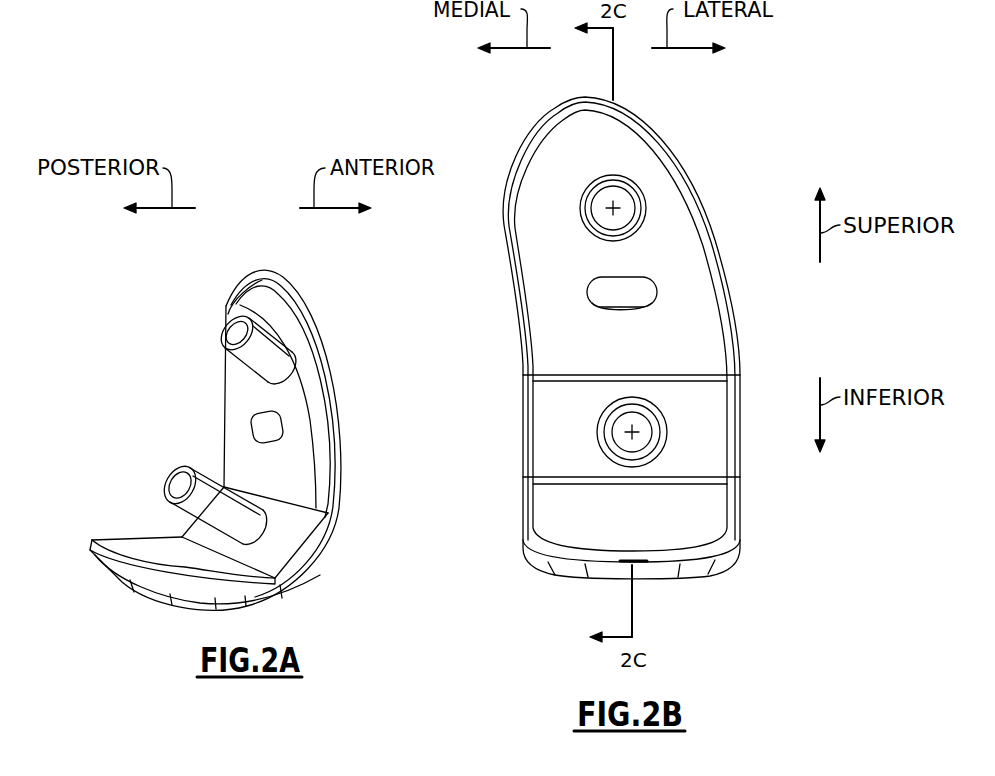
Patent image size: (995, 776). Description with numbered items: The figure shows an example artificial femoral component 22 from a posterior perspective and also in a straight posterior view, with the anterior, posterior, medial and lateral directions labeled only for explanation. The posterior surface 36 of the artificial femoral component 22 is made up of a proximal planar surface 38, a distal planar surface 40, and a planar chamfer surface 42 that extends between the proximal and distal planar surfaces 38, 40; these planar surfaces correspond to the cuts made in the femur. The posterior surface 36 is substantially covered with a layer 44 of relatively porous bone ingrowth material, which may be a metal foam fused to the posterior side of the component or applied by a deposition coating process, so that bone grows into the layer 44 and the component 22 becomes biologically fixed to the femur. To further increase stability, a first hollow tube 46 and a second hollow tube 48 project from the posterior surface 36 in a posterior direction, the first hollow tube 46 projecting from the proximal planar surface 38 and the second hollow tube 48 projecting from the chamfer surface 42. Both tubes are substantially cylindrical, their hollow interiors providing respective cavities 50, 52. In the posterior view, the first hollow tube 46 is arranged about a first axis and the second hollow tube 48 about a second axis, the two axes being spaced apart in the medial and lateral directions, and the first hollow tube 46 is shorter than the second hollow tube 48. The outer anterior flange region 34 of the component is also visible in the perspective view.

In FIG. 2A, the artificial femoral component 22 is at (322, 290).
In FIG. 2A, the anterior flange 34 is at (334, 362).
In FIG. 2A, the posterior surface 36 is at (198, 392).
In FIG. 2A, the proximal planar surface 38 is at (224, 302).
In FIG. 2B, the proximal planar surface 38 is at (698, 213).
In FIG. 2A, the distal planar surface 40 is at (141, 528).
In FIG. 2A, the planar chamfer surface 42 is at (285, 527).
In FIG. 2B, the planar chamfer surface 42 is at (738, 430).
In FIG. 2A, the layer of bone ingrowth material 44 is at (300, 487).
In FIG. 2B, the layer of bone ingrowth material 44 is at (712, 337).
In FIG. 2A, the first hollow tube 46 is at (222, 357).
In FIG. 2B, the first hollow tube 46 is at (648, 200).
In FIG. 2A, the second hollow tube 48 is at (207, 465).
In FIG. 2B, the second hollow tube 48 is at (658, 426).
In FIG. 2B, the cavity 50 is at (599, 197).
In FIG. 2B, the cavity 52 is at (612, 430).